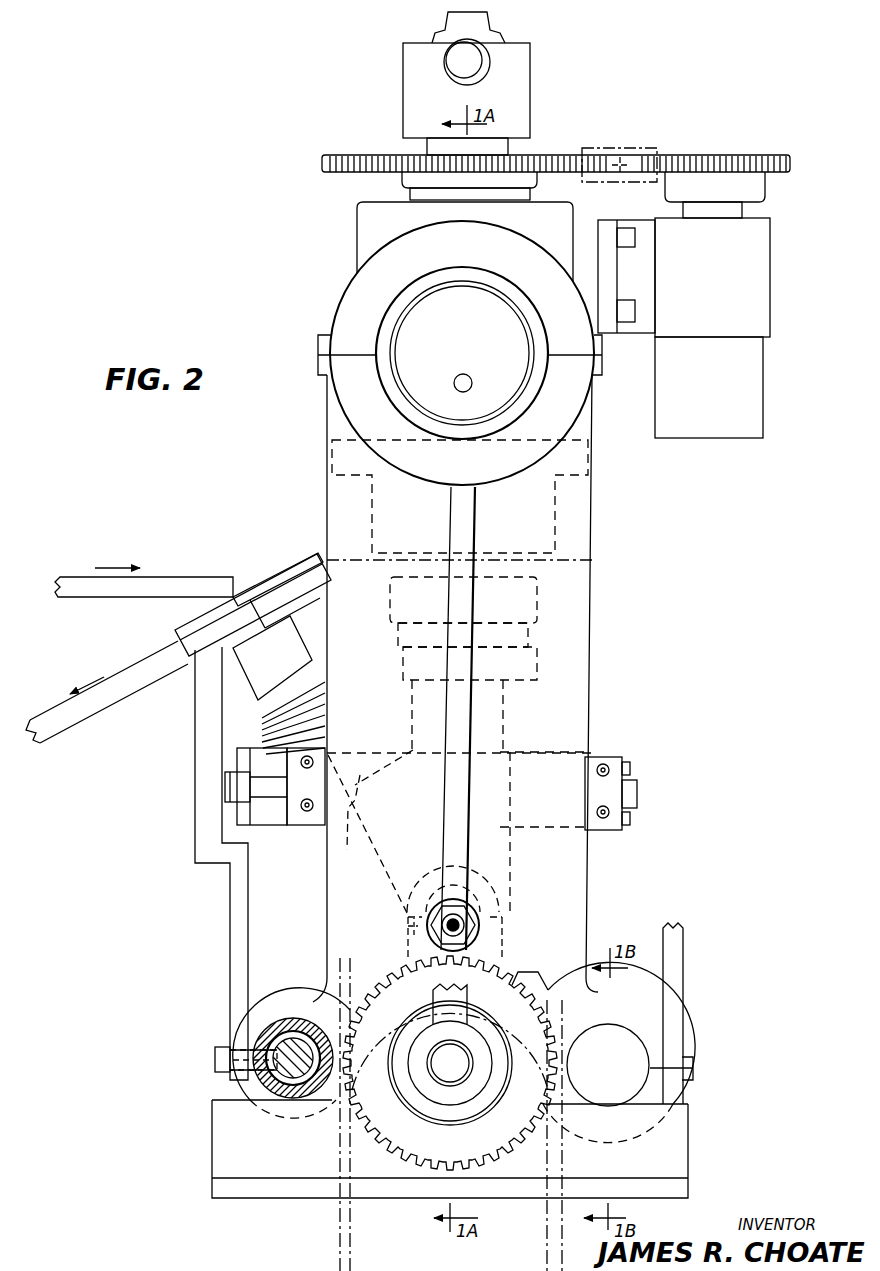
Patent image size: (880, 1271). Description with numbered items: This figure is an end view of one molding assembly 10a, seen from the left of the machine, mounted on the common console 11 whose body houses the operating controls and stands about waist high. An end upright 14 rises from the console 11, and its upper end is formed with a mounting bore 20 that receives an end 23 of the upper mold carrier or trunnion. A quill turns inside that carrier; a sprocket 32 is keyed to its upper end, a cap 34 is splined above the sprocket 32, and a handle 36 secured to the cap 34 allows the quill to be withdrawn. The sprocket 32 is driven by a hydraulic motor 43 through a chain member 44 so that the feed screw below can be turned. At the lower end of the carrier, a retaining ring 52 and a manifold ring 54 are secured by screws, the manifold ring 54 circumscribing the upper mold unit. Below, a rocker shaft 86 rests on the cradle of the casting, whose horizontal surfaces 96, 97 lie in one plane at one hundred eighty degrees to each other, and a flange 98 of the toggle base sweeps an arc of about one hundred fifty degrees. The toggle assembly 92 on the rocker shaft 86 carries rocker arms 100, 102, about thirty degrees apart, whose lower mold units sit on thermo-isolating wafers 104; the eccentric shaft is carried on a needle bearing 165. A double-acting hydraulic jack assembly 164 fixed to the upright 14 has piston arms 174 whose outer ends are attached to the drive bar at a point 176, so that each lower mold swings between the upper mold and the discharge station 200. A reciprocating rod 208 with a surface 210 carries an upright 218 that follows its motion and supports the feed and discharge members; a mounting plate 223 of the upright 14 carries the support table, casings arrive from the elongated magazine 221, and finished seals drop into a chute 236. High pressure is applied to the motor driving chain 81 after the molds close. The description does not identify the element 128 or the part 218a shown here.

The cap 34 is at (416, 64).
The handle 36 is at (455, 68).
The sprocket 32 is at (357, 156).
The chain member 44 is at (618, 150).
The hydraulic motor 43 is at (684, 328).
The molding assembly 10a is at (330, 304).
The mounting bore 20 is at (522, 300).
The end of upper mold carrier 23 is at (462, 353).
The retaining ring 52 is at (382, 500).
The manifold ring 54 is at (382, 543).
The end upright 14 is at (592, 560).
The rocker arm 100 is at (490, 704).
The toggle assembly 92 is at (510, 756).
The discharge station 200 is at (236, 565).
The guide bar 128 is at (284, 598).
The elongated magazine 221 is at (147, 590).
The chute 236 is at (122, 700).
The mounting plate 223 is at (272, 658).
The thermo-isolating wafers 104 is at (300, 722).
The piston arm attachment point 176 is at (242, 808).
The piston arms 174 is at (278, 792).
The needle bearing 165 is at (306, 828).
The double-acting hydraulic jack assembly 164 is at (642, 787).
The rocker arm 102 is at (370, 831).
The flange 98 is at (428, 882).
The rocker shaft 86 is at (481, 890).
The horizontal surface 97 is at (505, 902).
The horizontal surface 96 is at (408, 925).
The upright 218 is at (232, 908).
The bolt 218a is at (215, 1060).
The reciprocating rod 208 is at (303, 1022).
The surface 210 is at (291, 1057).
The console 11 is at (240, 1186).
The motor driving chain 81 is at (333, 1252).